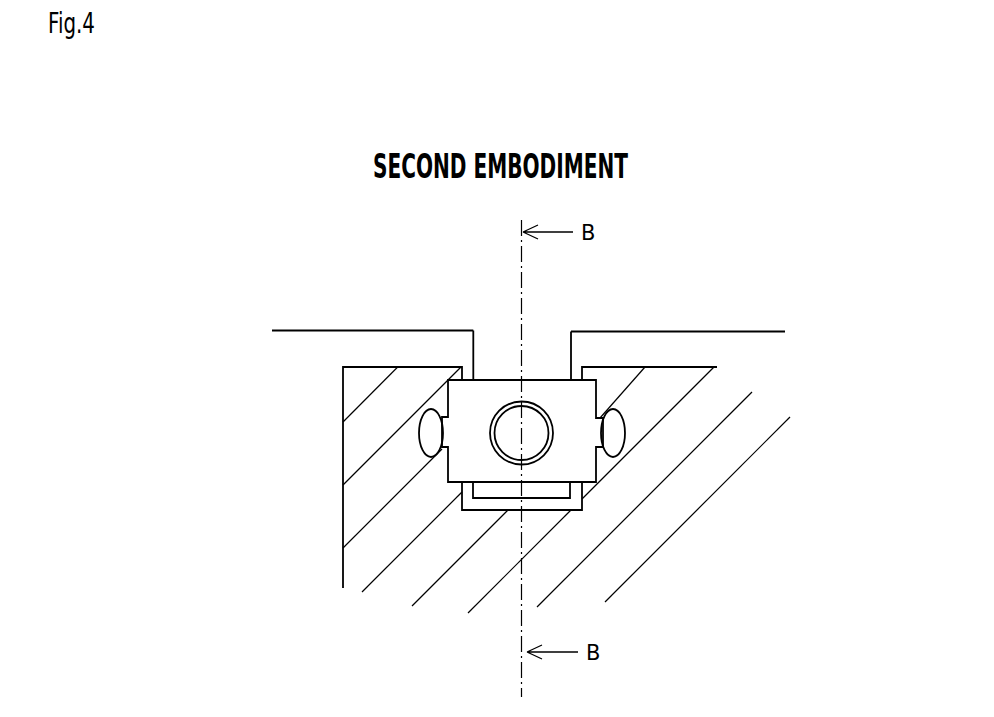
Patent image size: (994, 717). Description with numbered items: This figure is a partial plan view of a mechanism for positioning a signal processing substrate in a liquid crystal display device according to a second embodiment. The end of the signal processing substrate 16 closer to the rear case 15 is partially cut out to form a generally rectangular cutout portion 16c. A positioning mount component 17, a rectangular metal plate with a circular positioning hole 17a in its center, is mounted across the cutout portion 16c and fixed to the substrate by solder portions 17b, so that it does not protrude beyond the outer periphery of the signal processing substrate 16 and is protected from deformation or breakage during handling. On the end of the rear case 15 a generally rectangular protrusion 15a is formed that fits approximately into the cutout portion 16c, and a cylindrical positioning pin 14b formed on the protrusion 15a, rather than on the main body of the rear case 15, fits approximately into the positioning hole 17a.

The positioning pin 14b is at (525, 427).
The rear case 15 is at (408, 312).
The protrusion 15a is at (545, 363).
The signal processing substrate 16 is at (355, 520).
The cutout portion 16c is at (478, 513).
The positioning mount component 17 is at (592, 408).
The positioning hole 17a is at (503, 405).
The solder portions 17b is at (431, 447).